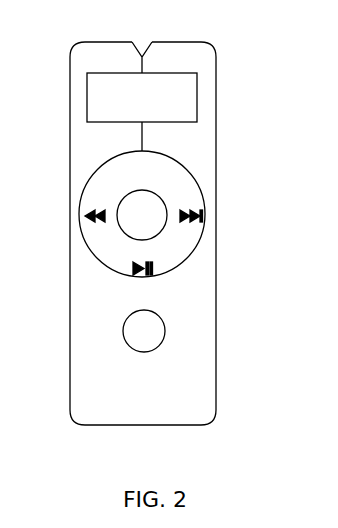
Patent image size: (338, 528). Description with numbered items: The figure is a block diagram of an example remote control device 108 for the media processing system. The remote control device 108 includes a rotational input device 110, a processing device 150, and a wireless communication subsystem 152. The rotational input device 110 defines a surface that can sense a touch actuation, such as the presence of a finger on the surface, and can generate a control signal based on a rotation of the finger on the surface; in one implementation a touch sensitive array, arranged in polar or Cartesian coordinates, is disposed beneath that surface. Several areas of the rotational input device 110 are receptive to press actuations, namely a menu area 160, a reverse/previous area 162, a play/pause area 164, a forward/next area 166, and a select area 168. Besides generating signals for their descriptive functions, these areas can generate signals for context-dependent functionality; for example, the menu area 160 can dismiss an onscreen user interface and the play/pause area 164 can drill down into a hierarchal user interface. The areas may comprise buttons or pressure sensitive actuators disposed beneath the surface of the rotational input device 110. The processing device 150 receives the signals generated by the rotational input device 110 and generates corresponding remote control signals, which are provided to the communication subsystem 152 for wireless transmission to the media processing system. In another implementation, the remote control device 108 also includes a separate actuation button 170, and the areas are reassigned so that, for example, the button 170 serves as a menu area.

The remote control device 108 is at (137, 212).
The rotational input device 110 is at (216, 165).
The processing device 150 is at (197, 82).
The wireless communication subsystem 152 is at (142, 42).
The menu area 160 is at (163, 166).
The reverse/previous area 162 is at (88, 200).
The play/pause area 164 is at (203, 220).
The forward/next area 166 is at (155, 265).
The select area 168 is at (142, 213).
The separate actuation button 170 is at (165, 330).